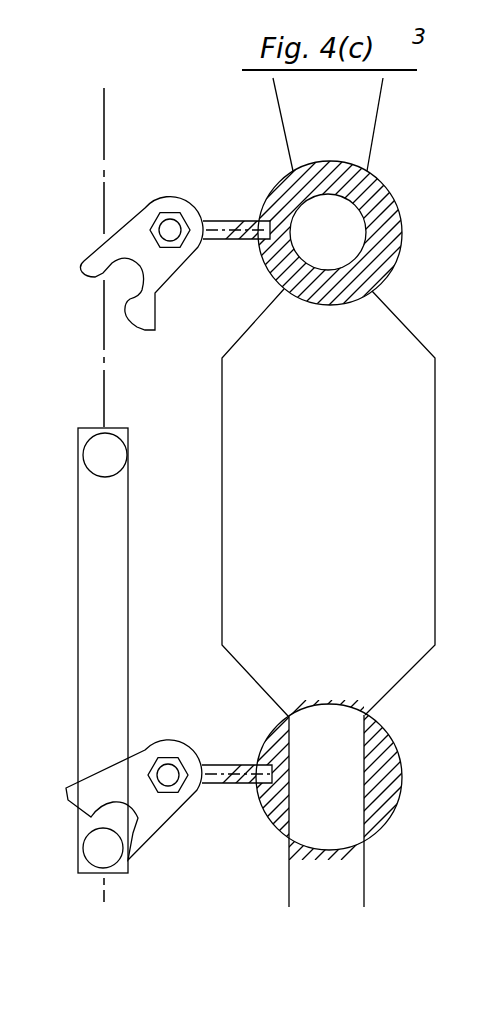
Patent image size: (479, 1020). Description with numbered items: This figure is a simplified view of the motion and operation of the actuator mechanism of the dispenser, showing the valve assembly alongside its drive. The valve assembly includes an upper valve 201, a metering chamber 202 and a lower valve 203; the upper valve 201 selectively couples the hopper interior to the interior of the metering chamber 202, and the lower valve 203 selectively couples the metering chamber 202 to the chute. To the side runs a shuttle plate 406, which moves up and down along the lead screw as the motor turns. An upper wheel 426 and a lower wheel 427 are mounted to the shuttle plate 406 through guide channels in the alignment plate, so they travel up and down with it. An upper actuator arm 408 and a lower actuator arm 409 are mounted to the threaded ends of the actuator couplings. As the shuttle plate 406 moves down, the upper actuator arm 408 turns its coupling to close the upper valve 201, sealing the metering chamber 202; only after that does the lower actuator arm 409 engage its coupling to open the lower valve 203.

The upper valve 201 is at (409, 208).
The metering chamber 202 is at (365, 510).
The lower valve 203 is at (412, 758).
The shuttle plate 406 is at (108, 613).
The upper actuator arm 408 is at (160, 272).
The lower actuator arm 409 is at (162, 822).
The upper wheel 426 is at (107, 458).
The lower wheel 427 is at (97, 848).